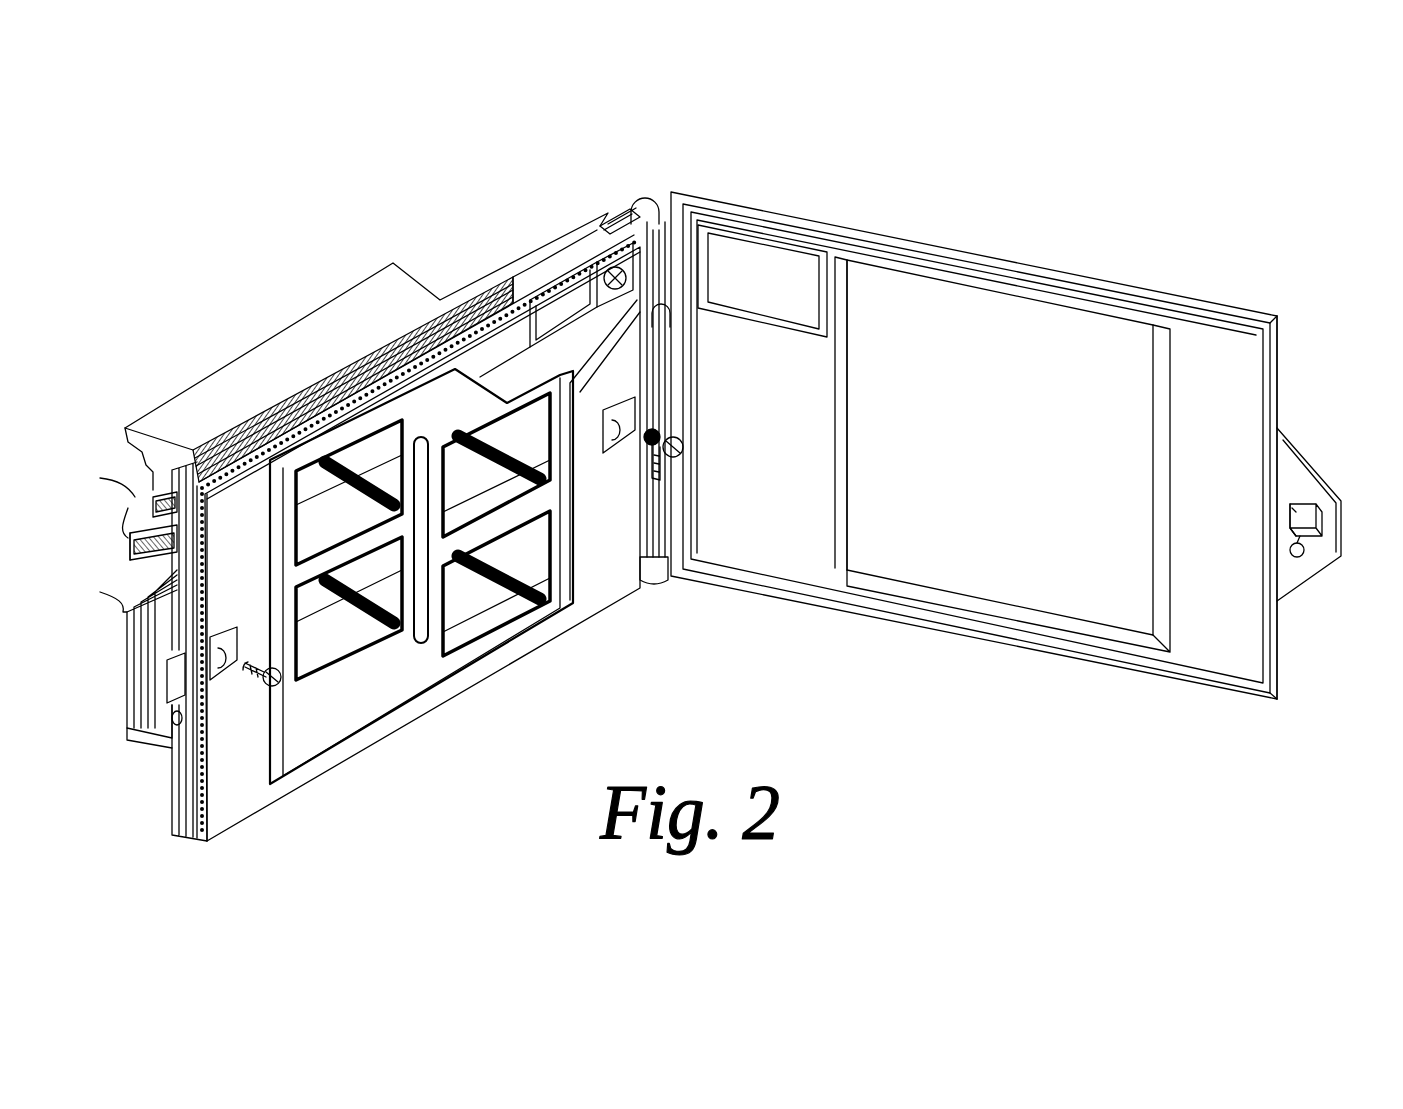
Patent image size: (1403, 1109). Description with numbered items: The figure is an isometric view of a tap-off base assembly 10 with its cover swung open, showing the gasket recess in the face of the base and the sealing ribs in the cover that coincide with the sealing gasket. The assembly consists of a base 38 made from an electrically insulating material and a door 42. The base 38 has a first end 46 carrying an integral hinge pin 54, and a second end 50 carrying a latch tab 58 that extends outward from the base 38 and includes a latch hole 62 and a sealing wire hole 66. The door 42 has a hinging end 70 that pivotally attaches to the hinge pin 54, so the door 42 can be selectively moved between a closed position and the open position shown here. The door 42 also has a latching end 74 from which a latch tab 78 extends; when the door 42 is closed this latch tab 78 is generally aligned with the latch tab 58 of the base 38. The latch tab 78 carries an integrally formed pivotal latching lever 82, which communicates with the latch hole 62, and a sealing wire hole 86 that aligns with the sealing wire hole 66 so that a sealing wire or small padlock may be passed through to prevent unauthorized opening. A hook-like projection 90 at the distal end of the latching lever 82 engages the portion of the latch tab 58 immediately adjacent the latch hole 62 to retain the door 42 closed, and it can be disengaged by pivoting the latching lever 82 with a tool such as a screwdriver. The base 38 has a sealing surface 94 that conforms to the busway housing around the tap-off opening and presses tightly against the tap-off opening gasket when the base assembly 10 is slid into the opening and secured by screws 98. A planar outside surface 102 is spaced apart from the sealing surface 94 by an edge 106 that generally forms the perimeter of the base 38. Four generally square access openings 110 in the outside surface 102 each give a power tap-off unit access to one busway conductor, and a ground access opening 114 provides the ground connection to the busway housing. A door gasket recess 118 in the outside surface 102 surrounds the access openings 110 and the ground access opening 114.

The tap-off base assembly 10 is at (853, 212).
The base 38 is at (280, 817).
The door 42 is at (1010, 462).
The first end 46 is at (614, 220).
The second end 50 is at (185, 840).
The hinge pin 54 is at (658, 518).
The latch tab 58 is at (177, 630).
The latch hole 62 is at (168, 676).
The sealing wire hole 66 is at (176, 726).
The hinging end 70 is at (652, 198).
The latching end 74 is at (1282, 344).
The latch tab 78 is at (1312, 460).
The latching lever 82 is at (1318, 525).
The sealing wire hole 86 is at (1300, 559).
The hook-like projection 90 is at (1292, 508).
The sealing surface 94 is at (177, 782).
The screws 98 is at (281, 679).
The outside surface 102 is at (224, 502).
The edge 106 is at (327, 380).
The access openings 110 is at (360, 630).
The ground access opening 114 is at (542, 318).
The door gasket recess 118 is at (510, 350).